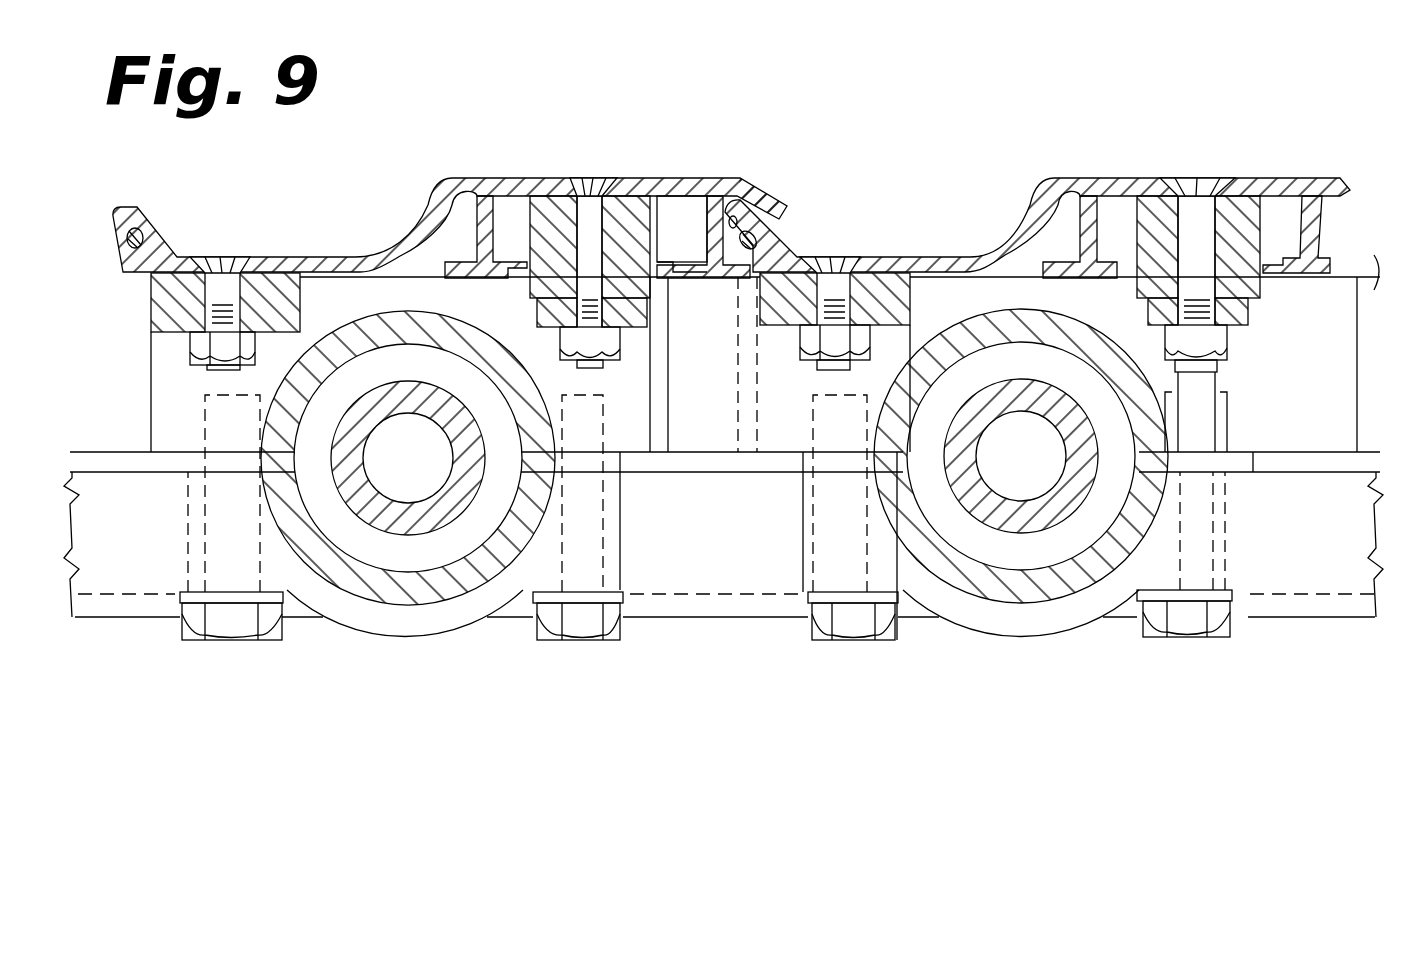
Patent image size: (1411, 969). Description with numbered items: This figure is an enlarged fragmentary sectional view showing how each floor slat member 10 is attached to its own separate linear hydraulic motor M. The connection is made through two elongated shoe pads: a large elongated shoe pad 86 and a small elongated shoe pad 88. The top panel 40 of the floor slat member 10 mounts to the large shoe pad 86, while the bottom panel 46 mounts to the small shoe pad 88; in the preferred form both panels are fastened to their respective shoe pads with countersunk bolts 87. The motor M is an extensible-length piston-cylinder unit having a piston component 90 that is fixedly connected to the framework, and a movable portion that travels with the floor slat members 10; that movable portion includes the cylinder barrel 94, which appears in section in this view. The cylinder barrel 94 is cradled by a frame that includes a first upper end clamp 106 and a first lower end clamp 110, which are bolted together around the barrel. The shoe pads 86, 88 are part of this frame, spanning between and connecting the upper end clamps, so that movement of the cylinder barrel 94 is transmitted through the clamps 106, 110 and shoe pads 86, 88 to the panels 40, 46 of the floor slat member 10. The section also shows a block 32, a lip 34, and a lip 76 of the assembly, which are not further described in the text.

The floor slat member 10 is at (670, 152).
The spacer block 32 is at (695, 215).
The upturned lip of base plate 34 is at (765, 245).
The top panel 40 is at (522, 178).
The bottom panel 46 is at (262, 263).
The lip of upper bracket 76 is at (750, 187).
The large elongated shoe pad 86 is at (692, 184).
The countersunk bolts 87 is at (590, 180).
The small elongated shoe pad 88 is at (275, 288).
The piston component 90 is at (405, 470).
The cylinder barrel 94 is at (487, 570).
The first upper end clamp 106 is at (400, 297).
The first lower end clamp 110 is at (425, 624).
The linear hydraulic motor M is at (463, 620).